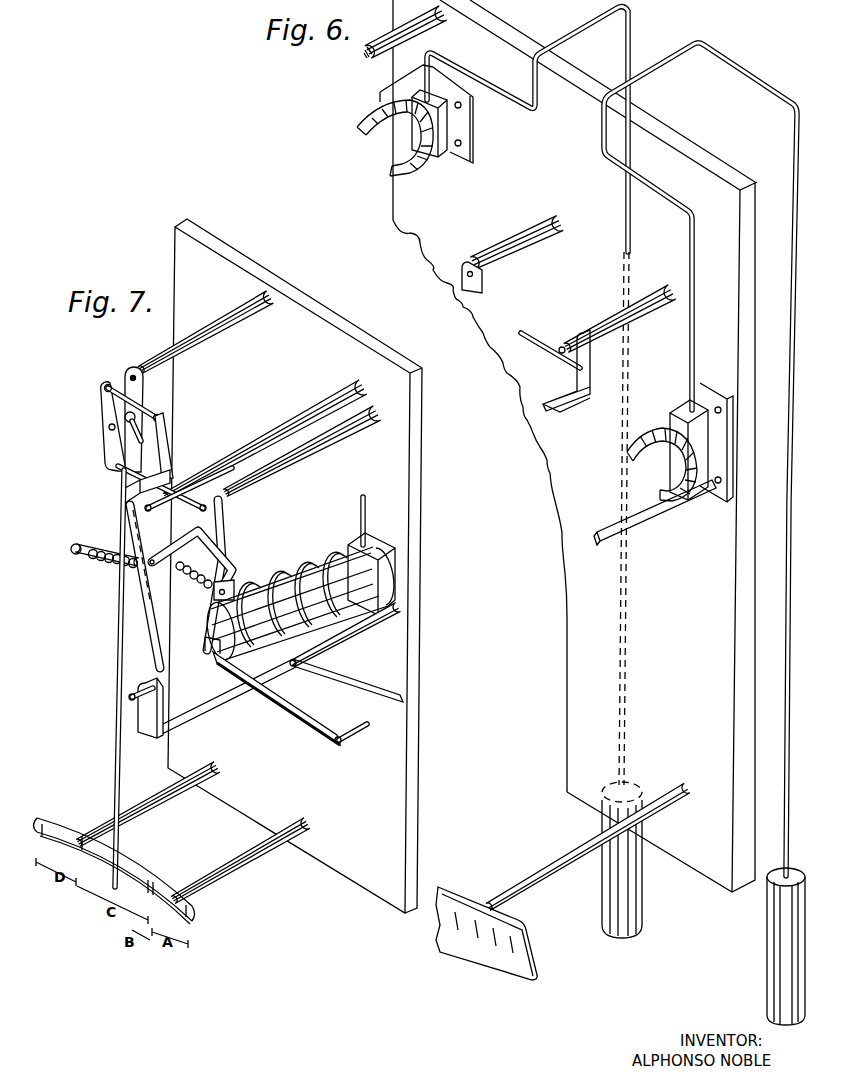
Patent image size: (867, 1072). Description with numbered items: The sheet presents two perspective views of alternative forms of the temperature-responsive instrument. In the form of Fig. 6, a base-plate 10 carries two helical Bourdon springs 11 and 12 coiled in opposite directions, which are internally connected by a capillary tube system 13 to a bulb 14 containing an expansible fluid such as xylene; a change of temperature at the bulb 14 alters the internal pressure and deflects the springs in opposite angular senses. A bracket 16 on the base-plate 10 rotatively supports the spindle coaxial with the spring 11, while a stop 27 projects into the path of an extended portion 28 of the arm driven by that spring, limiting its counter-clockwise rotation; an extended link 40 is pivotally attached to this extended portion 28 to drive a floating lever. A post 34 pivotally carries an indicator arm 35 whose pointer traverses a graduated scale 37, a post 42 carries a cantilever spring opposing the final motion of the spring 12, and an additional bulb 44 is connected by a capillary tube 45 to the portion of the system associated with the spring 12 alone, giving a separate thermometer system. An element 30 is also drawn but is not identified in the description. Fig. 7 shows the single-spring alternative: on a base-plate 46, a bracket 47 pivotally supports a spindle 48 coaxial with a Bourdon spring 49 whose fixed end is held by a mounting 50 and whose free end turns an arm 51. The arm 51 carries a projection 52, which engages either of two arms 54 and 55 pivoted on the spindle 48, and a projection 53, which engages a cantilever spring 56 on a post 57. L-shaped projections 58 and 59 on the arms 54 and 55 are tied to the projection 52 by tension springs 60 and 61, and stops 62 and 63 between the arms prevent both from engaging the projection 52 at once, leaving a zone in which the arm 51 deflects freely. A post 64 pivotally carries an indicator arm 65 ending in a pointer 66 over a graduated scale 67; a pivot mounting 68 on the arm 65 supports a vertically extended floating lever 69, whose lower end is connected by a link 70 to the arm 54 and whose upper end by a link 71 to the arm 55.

In FIG. 6, the base-plate 10 is at (737, 181).
In FIG. 6, the helical Bourdon spring 11 is at (646, 440).
In FIG. 6, the helical Bourdon spring 12 is at (418, 172).
In FIG. 6, the capillary tube system 13 is at (694, 273).
In FIG. 6, the bulb 14 is at (770, 925).
In FIG. 6, the bracket 16 is at (645, 532).
In FIG. 6, the stop 27 is at (636, 319).
In FIG. 6, the extended portion 28 is at (582, 338).
In FIG. 6, the plate 30 is at (486, 933).
In FIG. 6, the post 34 is at (545, 248).
In FIG. 6, the indicator arm 35 is at (483, 289).
In FIG. 6, the graduated scale 37 is at (470, 907).
In FIG. 6, the extended link 40 is at (557, 348).
In FIG. 6, the post 42 is at (368, 58).
In FIG. 6, the additional bulb 44 is at (643, 903).
In FIG. 6, the capillary tube 45 is at (633, 33).
In FIG. 7, the base-plate 46 is at (366, 894).
In FIG. 7, the bracket 47 is at (148, 739).
In FIG. 7, the spindle 48 is at (130, 695).
In FIG. 7, the Bourdon spring 49 is at (305, 568).
In FIG. 7, the mounting 50 is at (373, 559).
In FIG. 7, the arm 51 is at (272, 716).
In FIG. 7, the projection 52 is at (160, 558).
In FIG. 7, the projection 53 is at (356, 745).
In FIG. 7, the arm 54 is at (226, 520).
In FIG. 7, the arm 55 is at (129, 511).
In FIG. 7, the cantilever spring 56 is at (385, 692).
In FIG. 7, the post 57 is at (366, 634).
In FIG. 7, the L-shaped projection 58 is at (234, 592).
In FIG. 7, the L-shaped projection 59 is at (90, 548).
In FIG. 7, the tension spring 60 is at (191, 584).
In FIG. 7, the tension spring 61 is at (115, 571).
In FIG. 7, the stop 62 is at (310, 457).
In FIG. 7, the stop 63 is at (228, 452).
In FIG. 7, the post 64 is at (146, 363).
In FIG. 7, the indicator arm 65 is at (143, 394).
In FIG. 7, the pointer 66 is at (116, 782).
In FIG. 7, the graduated scale 67 is at (148, 891).
In FIG. 7, the pivot mounting 68 is at (137, 435).
In FIG. 7, the floating lever 69 is at (109, 430).
In FIG. 7, the link 70 is at (188, 494).
In FIG. 7, the link 71 is at (146, 411).